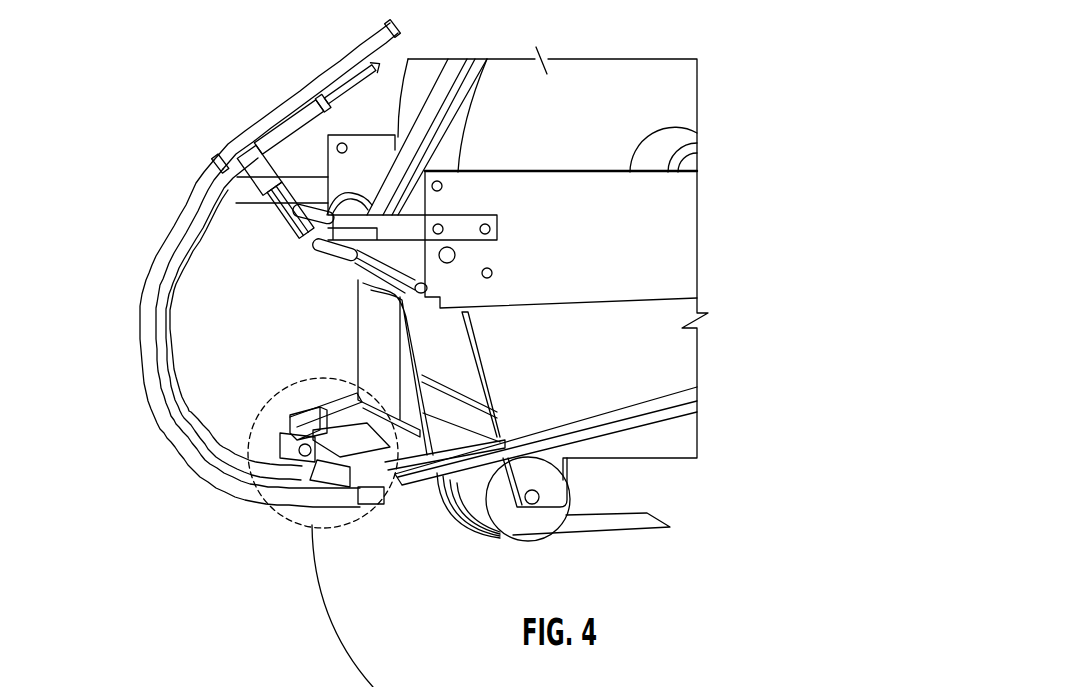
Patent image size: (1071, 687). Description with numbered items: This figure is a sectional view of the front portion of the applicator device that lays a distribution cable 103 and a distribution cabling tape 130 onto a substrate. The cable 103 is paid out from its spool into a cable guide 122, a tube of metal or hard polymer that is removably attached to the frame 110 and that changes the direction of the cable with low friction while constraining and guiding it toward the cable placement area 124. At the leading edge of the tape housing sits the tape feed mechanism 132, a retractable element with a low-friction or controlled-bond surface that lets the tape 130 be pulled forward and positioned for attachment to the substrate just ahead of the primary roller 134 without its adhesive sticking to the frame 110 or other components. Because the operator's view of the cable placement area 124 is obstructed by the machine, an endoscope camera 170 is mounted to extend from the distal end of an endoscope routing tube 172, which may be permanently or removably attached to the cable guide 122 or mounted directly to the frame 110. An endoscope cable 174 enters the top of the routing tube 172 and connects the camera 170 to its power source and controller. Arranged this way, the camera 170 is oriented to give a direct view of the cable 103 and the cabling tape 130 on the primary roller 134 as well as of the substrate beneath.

The distribution cable 103 is at (397, 62).
The endoscope cable 174 is at (268, 118).
The endoscope routing tube 172 is at (158, 423).
The cable guide 122 is at (174, 278).
The tape feed mechanism 132 is at (373, 342).
The frame 110 is at (608, 417).
The distribution cabling tape 130 is at (427, 410).
The primary roller 134 is at (523, 520).
The cable placement area 124 is at (420, 515).
The endoscope camera 170 is at (371, 492).